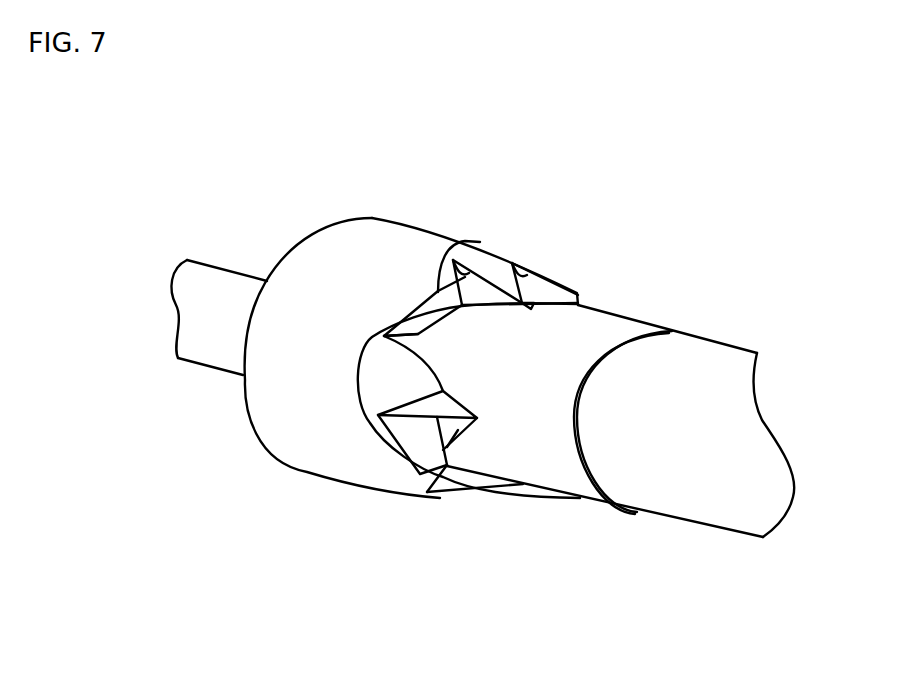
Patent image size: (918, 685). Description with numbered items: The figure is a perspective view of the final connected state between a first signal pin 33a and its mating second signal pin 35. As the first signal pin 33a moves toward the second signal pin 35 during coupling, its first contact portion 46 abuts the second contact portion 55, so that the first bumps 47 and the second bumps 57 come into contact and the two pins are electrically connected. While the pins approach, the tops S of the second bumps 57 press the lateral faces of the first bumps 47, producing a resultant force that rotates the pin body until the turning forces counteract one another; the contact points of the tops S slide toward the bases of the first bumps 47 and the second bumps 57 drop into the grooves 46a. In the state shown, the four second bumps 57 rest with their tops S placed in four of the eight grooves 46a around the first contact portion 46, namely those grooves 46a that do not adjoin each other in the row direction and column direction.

The first signal pin 33a is at (228, 253).
The cylindrical member 35 is at (722, 346).
The first contact portion 46 is at (420, 481).
The groove 46a is at (396, 336).
The first bump 47 is at (420, 402).
The second contact portion 55 is at (486, 489).
The second bump 57 is at (474, 352).
The top S is at (409, 337).